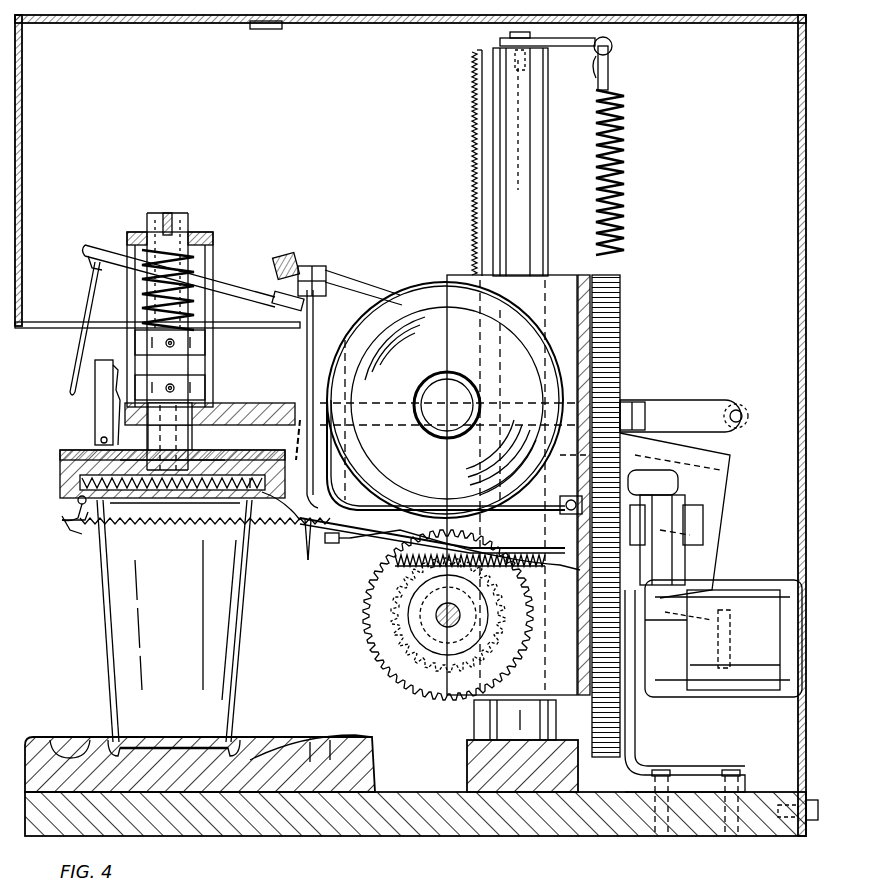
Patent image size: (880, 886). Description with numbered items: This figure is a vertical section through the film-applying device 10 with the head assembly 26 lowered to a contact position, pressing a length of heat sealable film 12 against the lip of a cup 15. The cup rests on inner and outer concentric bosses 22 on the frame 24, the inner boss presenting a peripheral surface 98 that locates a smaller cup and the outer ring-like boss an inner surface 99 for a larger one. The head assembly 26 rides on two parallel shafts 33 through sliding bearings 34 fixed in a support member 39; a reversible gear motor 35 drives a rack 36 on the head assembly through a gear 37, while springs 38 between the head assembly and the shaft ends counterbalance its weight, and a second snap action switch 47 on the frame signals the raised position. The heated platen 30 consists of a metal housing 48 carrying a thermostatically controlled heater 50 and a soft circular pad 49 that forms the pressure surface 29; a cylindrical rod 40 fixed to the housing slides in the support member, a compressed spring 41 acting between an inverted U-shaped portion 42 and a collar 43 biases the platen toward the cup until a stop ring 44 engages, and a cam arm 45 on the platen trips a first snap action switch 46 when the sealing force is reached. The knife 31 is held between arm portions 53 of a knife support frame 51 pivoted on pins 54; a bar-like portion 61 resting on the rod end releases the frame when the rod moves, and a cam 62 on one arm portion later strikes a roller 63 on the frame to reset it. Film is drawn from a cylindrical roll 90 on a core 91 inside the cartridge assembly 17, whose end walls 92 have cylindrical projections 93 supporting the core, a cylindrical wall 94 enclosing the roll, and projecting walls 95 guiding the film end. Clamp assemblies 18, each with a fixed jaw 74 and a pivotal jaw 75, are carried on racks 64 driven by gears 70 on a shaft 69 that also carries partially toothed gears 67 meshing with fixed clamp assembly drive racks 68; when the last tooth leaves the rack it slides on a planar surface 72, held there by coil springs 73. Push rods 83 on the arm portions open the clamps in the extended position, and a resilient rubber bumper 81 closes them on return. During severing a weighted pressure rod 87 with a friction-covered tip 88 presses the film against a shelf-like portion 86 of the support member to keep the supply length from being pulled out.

The device 10 is at (755, 842).
The heat sealable film 12 is at (278, 510).
The cup 15 is at (172, 608).
The cartridge assembly 17 is at (412, 290).
The clamp assemblies 18 is at (78, 535).
The bosses 22 is at (235, 738).
The frame 24 is at (335, 822).
The head assembly 26 is at (240, 405).
The pressure surface 29 is at (163, 500).
The heated platen 30 is at (149, 499).
The knife 31 is at (298, 446).
The shafts 33 is at (526, 142).
The sliding bearings 34 is at (565, 275).
The reversible gear motor 35 is at (768, 642).
The rack 36 is at (600, 328).
The gear 37 is at (598, 486).
The springs 38 is at (626, 155).
The support member 39 is at (250, 426).
The cylindrical rod 40 is at (147, 218).
The compressed spring 41 is at (196, 310).
The inverted U-shaped portion 42 is at (134, 308).
The collar 43 is at (206, 344).
The stop ring 44 is at (206, 384).
The cam arm 45 is at (96, 414).
The first snap action switch 46 is at (118, 366).
The second snap action switch 47 is at (612, 66).
The housing 48 is at (70, 452).
The resilient circular pad 49 is at (190, 500).
The thermostatically controlled heater 50 is at (140, 500).
The knife support frame 51 is at (340, 266).
The arm portions 53 is at (236, 282).
The pins 54 is at (640, 456).
The bar-like portion 61 is at (170, 222).
The cam 62 is at (712, 580).
The roller 63 is at (745, 404).
The racks 64 is at (272, 526).
The partially toothed gears 67 is at (482, 578).
The clamp assembly drive racks 68 is at (472, 118).
The shaft 69 is at (462, 612).
The gears 70 is at (420, 690).
The planar surface 72 is at (477, 720).
The coil springs 73 is at (404, 600).
The fixed jaw 74 is at (72, 514).
The pivotal jaw 75 is at (70, 522).
The resilient rubber bumper 81 is at (331, 545).
The push rods 83 is at (72, 360).
The shelf-like portion 86 is at (412, 545).
The weighted pressure rod 87 is at (306, 360).
The tip 88 is at (318, 505).
The cylindrical roll 90 is at (405, 326).
The core 91 is at (440, 436).
The end walls 92 is at (534, 488).
The cylindrical projections 93 is at (447, 405).
The cylindrical wall 94 is at (525, 325).
The projecting walls 95 is at (298, 553).
The peripheral surface 98 is at (125, 742).
The inner surface 99 is at (105, 740).